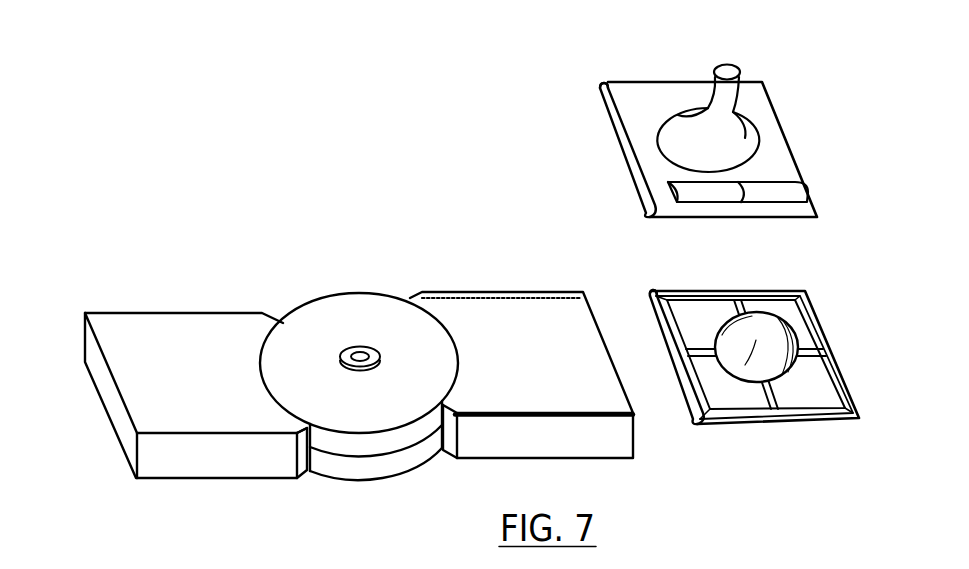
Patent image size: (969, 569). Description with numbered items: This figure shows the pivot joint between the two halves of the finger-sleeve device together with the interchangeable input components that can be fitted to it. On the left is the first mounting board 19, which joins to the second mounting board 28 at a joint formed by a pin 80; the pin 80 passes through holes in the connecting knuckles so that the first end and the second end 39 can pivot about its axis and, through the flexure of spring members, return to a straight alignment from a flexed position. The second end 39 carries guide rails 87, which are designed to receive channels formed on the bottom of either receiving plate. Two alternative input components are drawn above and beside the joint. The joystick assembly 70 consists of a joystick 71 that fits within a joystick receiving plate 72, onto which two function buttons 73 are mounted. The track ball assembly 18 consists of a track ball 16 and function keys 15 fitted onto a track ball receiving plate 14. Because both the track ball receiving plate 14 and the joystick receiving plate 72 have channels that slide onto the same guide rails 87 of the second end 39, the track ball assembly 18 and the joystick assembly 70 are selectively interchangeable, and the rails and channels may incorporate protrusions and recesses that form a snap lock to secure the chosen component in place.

The track ball receiving plate 14 is at (745, 366).
The function keys 15 is at (818, 383).
The track ball 16 is at (786, 362).
The track ball assembly 18 is at (781, 433).
The first mounting board 19 is at (98, 380).
The second mounting board 28 is at (596, 94).
The second end 39 is at (408, 472).
The joystick assembly 70 is at (718, 130).
The joystick 71 is at (722, 65).
The joystick receiving plate 72 is at (778, 135).
The function buttons 73 is at (782, 186).
The pin 80 is at (338, 358).
The guide rails 87 is at (566, 300).